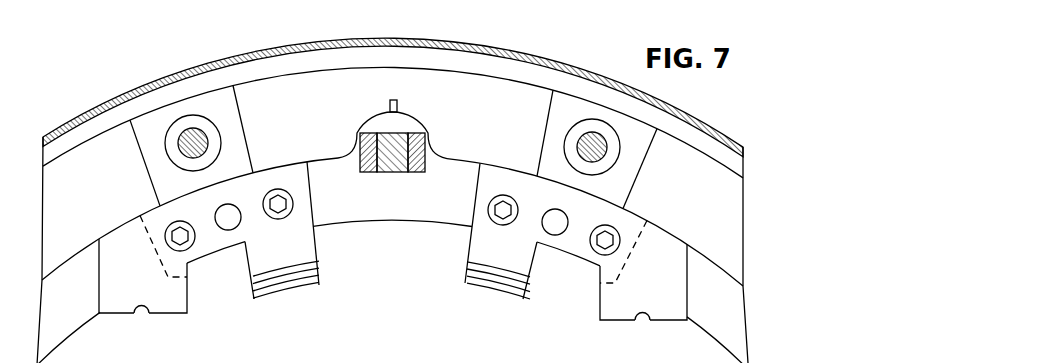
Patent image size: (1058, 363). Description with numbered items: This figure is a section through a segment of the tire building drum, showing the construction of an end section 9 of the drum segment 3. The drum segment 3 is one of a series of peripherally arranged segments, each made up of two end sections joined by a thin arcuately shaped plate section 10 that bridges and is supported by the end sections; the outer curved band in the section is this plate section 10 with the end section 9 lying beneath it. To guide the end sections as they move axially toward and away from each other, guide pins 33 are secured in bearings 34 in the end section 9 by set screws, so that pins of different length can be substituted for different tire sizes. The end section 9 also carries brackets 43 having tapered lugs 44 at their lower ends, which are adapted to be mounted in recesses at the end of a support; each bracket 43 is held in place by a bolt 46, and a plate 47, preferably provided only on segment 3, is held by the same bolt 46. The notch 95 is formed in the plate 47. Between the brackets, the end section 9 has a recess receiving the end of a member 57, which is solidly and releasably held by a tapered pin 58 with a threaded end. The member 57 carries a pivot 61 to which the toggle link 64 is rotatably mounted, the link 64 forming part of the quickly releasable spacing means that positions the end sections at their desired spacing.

The drum segment 3 is at (470, 62).
The end section 9 is at (302, 73).
The plate section 10 is at (153, 82).
The guide pin 33 is at (186, 146).
The bearing 34 is at (213, 153).
The bracket 43 is at (312, 244).
The tapered lug 44 is at (260, 288).
The bolt 46 is at (294, 207).
The plate 47 is at (118, 320).
The member 57 is at (377, 172).
The tapered pin 58 is at (398, 106).
The pivot 61 is at (428, 136).
The link 64 is at (362, 137).
The notch 95 is at (143, 314).